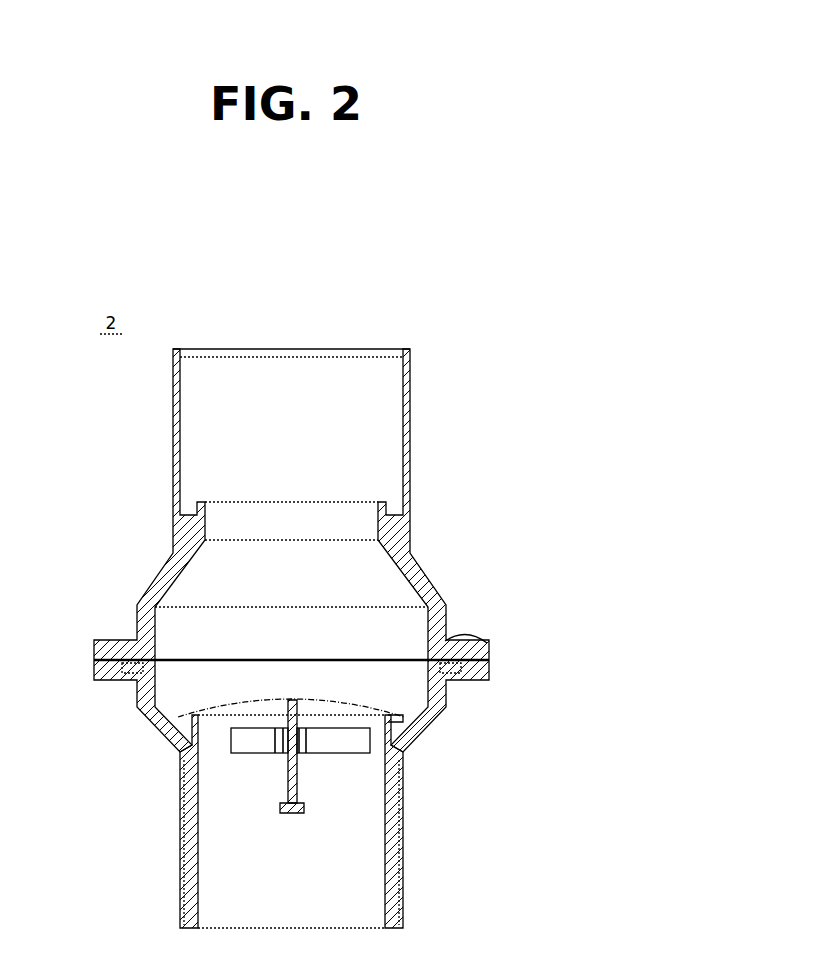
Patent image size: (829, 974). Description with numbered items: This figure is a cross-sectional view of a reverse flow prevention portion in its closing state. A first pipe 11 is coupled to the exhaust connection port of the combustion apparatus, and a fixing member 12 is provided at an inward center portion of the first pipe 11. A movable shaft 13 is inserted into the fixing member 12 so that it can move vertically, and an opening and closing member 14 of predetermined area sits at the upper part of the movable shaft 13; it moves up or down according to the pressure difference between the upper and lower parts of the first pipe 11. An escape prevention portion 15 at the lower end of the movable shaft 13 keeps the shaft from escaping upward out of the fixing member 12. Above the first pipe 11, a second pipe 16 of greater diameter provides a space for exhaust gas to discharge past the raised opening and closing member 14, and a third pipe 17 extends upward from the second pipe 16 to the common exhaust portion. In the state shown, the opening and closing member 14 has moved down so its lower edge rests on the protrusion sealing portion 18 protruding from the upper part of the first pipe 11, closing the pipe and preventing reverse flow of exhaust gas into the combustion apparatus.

The first pipe 11 is at (403, 872).
The fixing member 12 is at (357, 750).
The movable shaft 13 is at (288, 767).
The opening and closing member 14 is at (193, 705).
The escape prevention portion 15 is at (280, 807).
The second pipe 16 is at (410, 676).
The third pipe 17 is at (410, 433).
The protrusion sealing portion 18 is at (385, 715).